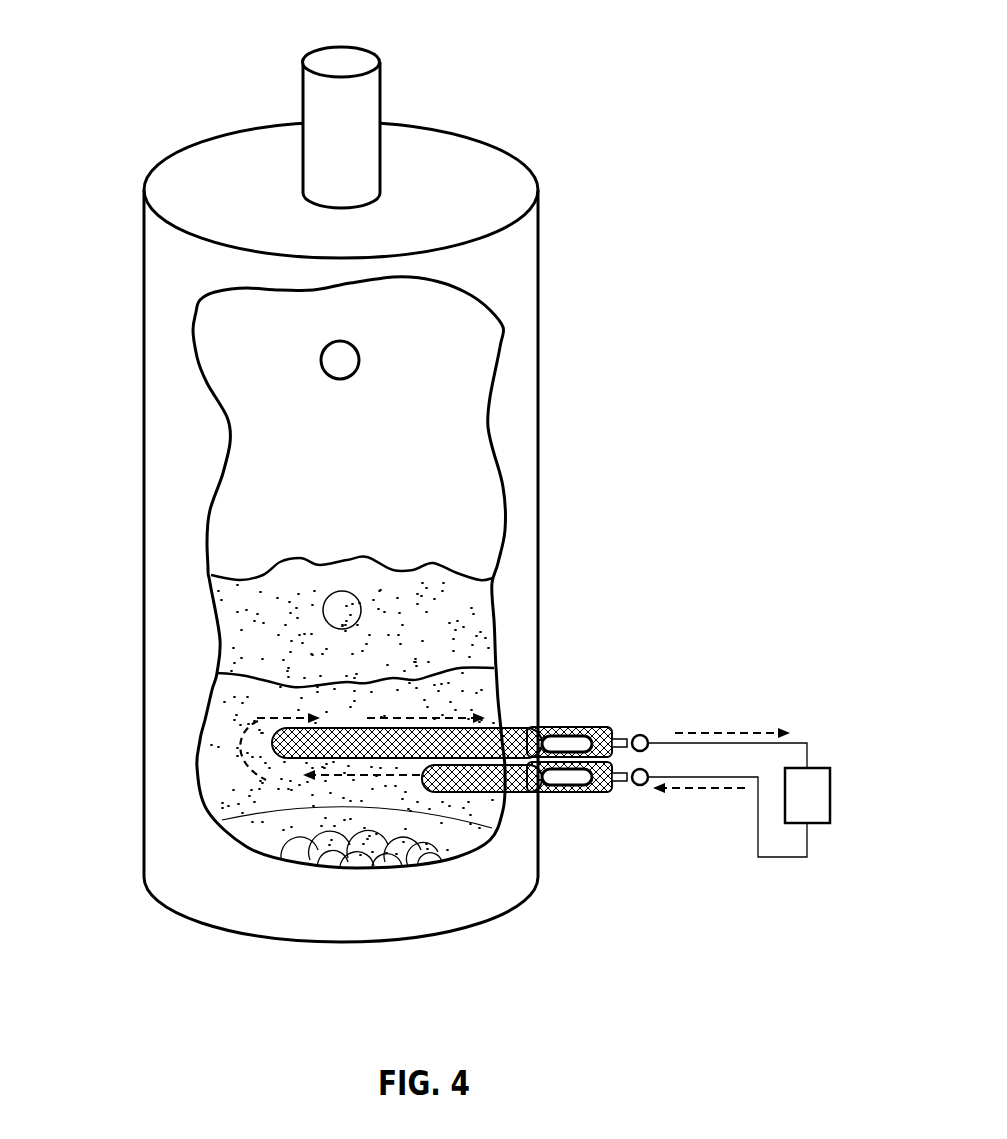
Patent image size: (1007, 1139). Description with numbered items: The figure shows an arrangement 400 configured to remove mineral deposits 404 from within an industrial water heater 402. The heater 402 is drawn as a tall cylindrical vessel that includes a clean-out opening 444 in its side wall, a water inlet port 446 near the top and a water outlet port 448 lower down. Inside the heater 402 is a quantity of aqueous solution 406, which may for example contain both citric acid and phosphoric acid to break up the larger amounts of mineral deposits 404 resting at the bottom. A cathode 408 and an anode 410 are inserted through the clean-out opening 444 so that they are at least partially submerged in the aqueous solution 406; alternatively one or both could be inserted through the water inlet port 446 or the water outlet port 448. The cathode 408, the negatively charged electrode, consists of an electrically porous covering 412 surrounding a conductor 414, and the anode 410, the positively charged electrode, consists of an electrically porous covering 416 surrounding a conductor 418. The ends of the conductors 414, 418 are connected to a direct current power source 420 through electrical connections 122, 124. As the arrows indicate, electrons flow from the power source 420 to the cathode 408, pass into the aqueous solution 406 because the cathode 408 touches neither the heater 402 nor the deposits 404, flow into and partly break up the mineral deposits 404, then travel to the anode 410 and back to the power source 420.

The arrangement 400 is at (151, 51).
The industrial water heater 402 is at (540, 277).
The mineral deposits 404 is at (367, 868).
The aqueous solution 406 is at (227, 728).
The cathode 408 is at (637, 798).
The anode 410 is at (637, 720).
The electrically porous covering 412 is at (590, 794).
The conductor 414 is at (553, 792).
The electrically porous covering 416 is at (590, 725).
The conductor 418 is at (553, 732).
The power source 420 is at (830, 790).
The lower conductor 122 is at (783, 857).
The upper conductor 124 is at (805, 740).
The clean-out opening 444 is at (546, 717).
The water inlet port 446 is at (323, 352).
The water outlet port 448 is at (324, 598).